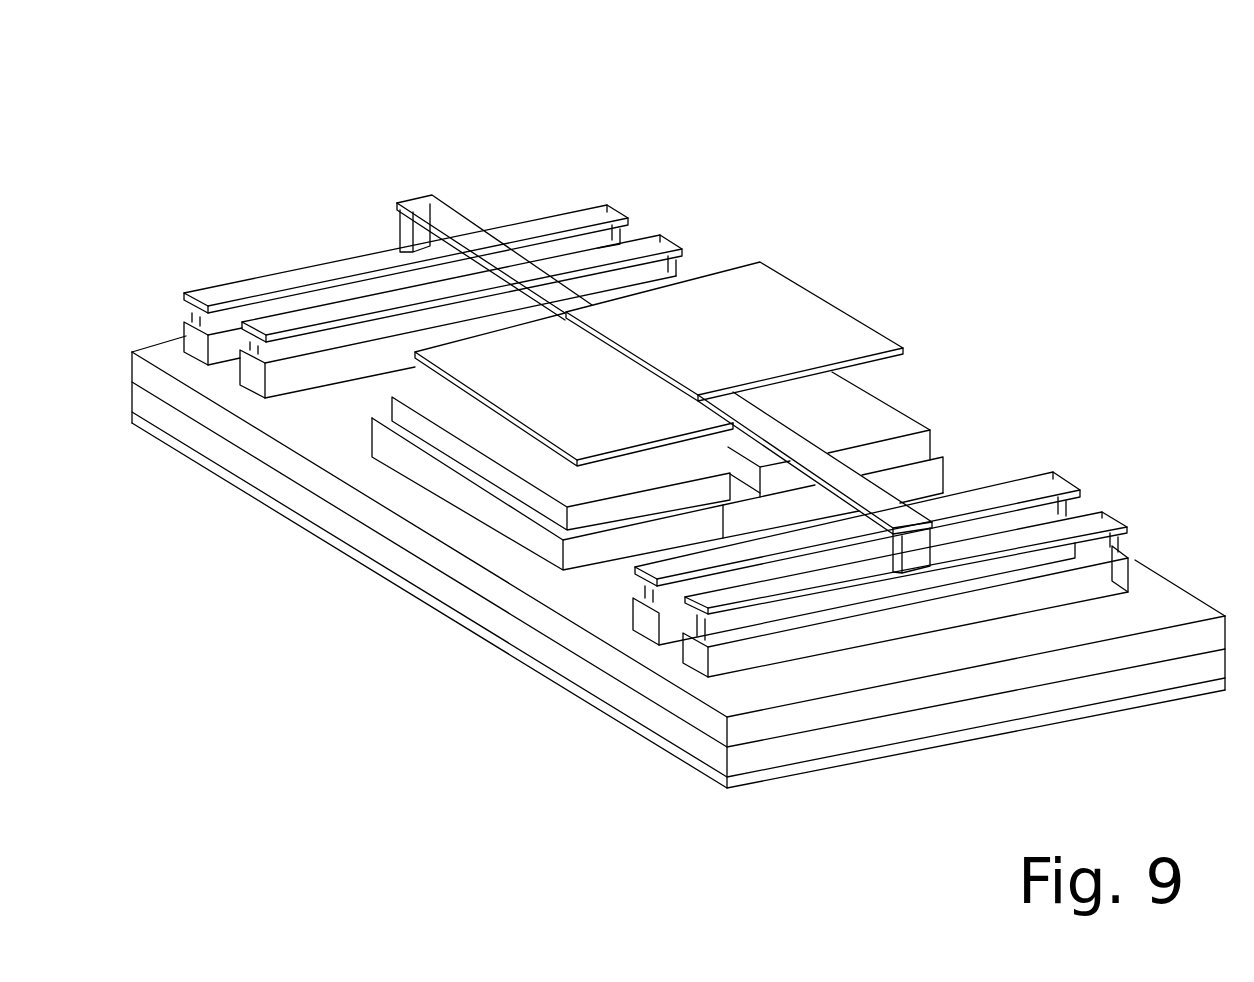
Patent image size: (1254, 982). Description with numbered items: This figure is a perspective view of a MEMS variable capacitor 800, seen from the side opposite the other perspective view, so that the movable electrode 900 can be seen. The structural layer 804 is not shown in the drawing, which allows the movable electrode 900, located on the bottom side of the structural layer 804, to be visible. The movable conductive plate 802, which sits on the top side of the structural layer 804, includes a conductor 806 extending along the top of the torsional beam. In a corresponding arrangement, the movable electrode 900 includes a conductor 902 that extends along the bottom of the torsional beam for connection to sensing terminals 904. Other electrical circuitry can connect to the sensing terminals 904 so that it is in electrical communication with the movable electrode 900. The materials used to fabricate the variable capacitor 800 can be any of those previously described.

The MEMS variable capacitor 800 is at (796, 146).
The movable conductive plate 802 is at (805, 298).
The structural layer 804 is at (405, 233).
The conductor 806 is at (275, 280).
The movable electrode 900 is at (490, 400).
The conductor 902 is at (893, 505).
The sensing terminals 904 is at (640, 596).